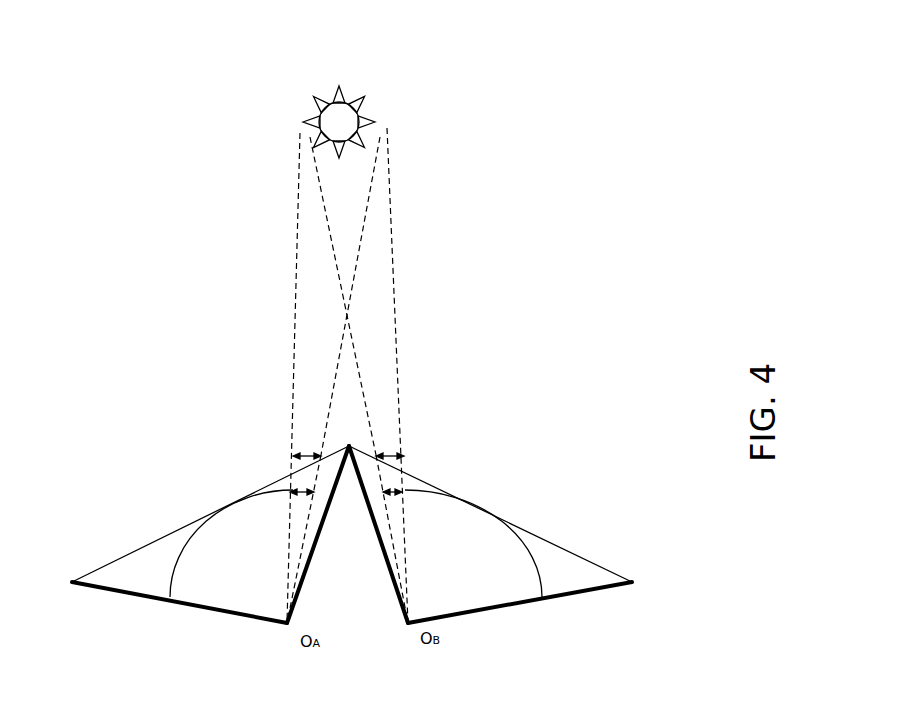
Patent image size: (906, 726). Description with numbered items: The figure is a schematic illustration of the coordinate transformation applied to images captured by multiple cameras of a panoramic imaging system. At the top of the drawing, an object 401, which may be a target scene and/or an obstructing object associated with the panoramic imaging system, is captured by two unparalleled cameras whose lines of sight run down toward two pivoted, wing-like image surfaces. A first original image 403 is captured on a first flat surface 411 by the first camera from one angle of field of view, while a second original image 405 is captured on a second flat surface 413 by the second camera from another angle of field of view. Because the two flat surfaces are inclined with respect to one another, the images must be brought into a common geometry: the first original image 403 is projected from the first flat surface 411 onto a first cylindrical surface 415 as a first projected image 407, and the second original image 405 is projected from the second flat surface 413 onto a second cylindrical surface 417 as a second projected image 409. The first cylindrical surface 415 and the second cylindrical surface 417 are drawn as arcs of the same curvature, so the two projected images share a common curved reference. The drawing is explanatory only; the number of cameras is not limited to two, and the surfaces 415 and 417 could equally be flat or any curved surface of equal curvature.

The object 401 is at (378, 103).
The first original image 403 is at (288, 447).
The second original image 405 is at (409, 447).
The first projected image 407 is at (285, 508).
The second projected image 409 is at (417, 505).
The first flat surface 411 is at (155, 532).
The second flat surface 413 is at (553, 532).
The first cylindrical surface 415 is at (161, 576).
The second cylindrical surface 417 is at (545, 578).